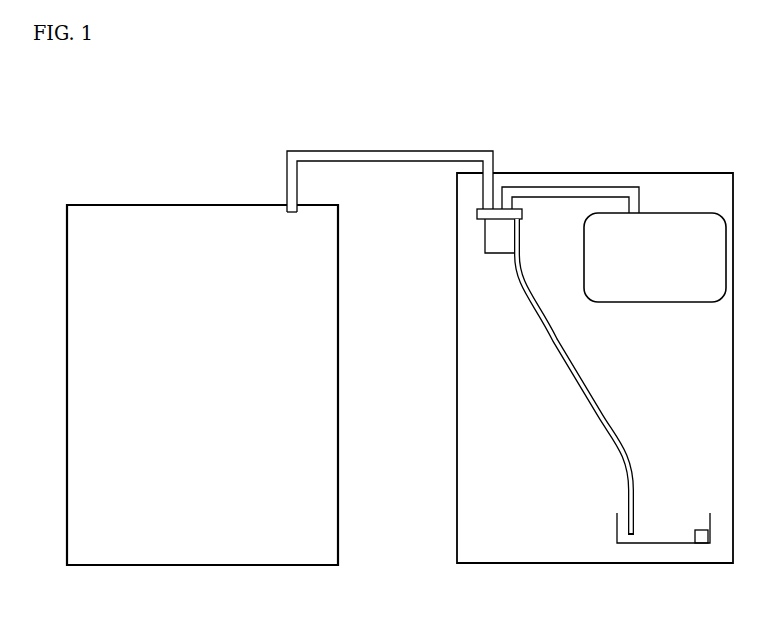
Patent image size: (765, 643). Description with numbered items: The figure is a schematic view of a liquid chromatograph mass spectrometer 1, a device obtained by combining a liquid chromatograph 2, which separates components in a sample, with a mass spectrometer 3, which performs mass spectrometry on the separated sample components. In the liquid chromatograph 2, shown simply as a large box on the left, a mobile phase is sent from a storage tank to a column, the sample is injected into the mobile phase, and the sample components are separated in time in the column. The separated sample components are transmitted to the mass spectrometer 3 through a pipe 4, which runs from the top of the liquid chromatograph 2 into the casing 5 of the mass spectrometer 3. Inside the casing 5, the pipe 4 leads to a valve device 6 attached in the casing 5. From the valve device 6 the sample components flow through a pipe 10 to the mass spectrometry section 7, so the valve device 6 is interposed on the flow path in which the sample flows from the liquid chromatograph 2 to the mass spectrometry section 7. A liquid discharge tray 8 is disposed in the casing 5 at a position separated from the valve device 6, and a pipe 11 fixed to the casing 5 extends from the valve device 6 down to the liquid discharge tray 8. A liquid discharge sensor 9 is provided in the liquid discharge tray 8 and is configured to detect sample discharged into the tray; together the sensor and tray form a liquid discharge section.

The liquid chromatograph mass spectrometer 1 is at (458, 127).
The liquid chromatograph 2 is at (147, 205).
The mass spectrometer 3 is at (567, 170).
The pipe 4 is at (346, 151).
The casing 5 is at (650, 173).
The valve device 6 is at (494, 253).
The mass spectrometry section 7 is at (706, 302).
The liquid discharge tray 8 is at (617, 525).
The liquid discharge sensor 9 is at (695, 530).
The pipe 10 is at (562, 197).
The pipe 11 is at (580, 382).